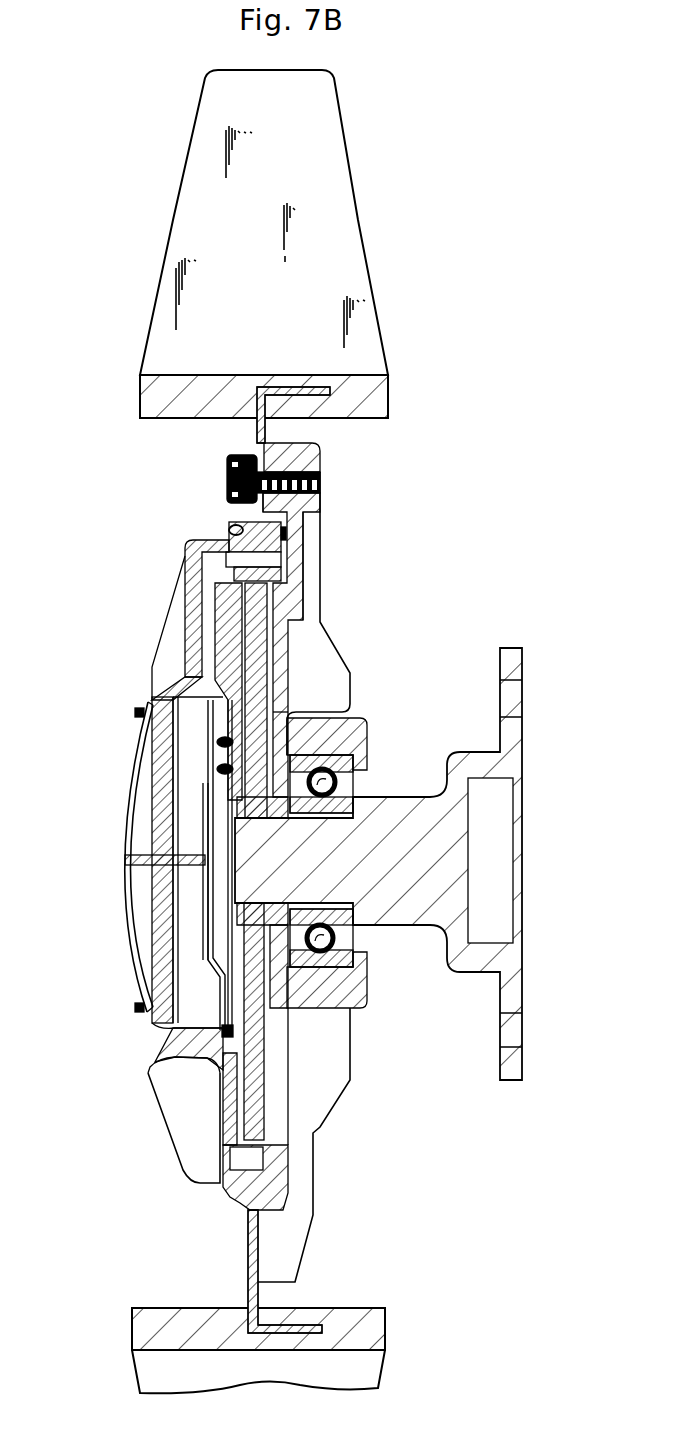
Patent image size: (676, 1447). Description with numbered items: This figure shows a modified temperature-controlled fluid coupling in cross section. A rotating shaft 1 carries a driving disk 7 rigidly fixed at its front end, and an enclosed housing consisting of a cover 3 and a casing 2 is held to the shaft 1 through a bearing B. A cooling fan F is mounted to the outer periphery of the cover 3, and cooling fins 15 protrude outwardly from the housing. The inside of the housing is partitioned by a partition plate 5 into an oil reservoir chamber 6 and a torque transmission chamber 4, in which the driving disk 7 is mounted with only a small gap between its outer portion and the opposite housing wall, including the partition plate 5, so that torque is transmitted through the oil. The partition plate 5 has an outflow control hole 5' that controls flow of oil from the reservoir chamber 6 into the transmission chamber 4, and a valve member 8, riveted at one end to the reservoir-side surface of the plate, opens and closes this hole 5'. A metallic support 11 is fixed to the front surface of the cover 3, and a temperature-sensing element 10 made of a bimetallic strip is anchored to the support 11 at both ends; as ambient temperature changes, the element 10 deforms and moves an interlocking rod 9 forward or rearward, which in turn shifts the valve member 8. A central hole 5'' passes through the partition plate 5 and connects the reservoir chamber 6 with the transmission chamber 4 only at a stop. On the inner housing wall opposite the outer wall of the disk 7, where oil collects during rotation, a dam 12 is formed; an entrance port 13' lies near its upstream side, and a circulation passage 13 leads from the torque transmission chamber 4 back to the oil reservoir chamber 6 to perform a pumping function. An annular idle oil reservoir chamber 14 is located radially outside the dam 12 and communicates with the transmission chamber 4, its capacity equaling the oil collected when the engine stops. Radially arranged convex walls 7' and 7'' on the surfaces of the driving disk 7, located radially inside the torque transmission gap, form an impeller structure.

The cooling fan F is at (356, 271).
The rotating shaft 1 is at (463, 875).
The casing 2 is at (287, 688).
The cover 3 is at (220, 1050).
The torque transmission chamber 4 is at (277, 658).
The partition plate 5 is at (115, 854).
The outflow control hole 5' is at (156, 996).
The hole 5'' is at (156, 865).
The oil reservoir chamber 6 is at (183, 748).
The driving disk 7 is at (308, 861).
The convex wall 7' is at (323, 867).
The convex wall 7'' is at (171, 875).
The valve member 8 is at (145, 887).
The interlocking rod 9 is at (127, 855).
The temperature-sensing element 10 is at (152, 796).
The metallic support 11 is at (124, 918).
The dam 12 is at (272, 582).
The circulation passage 13 is at (178, 784).
The entrance port 13' is at (215, 557).
The annular idle oil reservoir chamber 14 is at (226, 538).
The cooling fins 15 is at (312, 538).
The bearing B is at (333, 790).